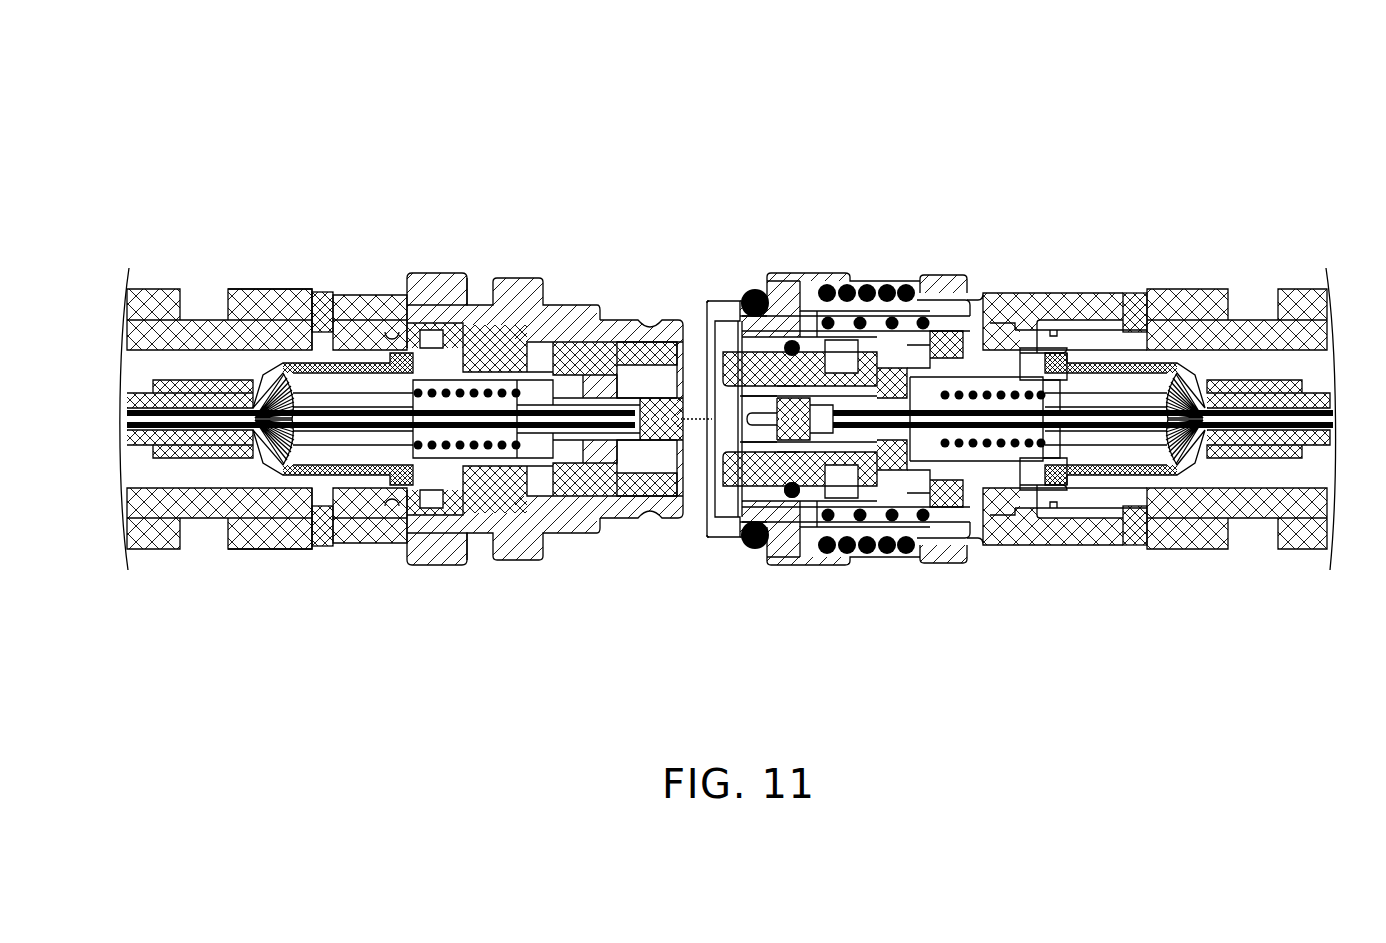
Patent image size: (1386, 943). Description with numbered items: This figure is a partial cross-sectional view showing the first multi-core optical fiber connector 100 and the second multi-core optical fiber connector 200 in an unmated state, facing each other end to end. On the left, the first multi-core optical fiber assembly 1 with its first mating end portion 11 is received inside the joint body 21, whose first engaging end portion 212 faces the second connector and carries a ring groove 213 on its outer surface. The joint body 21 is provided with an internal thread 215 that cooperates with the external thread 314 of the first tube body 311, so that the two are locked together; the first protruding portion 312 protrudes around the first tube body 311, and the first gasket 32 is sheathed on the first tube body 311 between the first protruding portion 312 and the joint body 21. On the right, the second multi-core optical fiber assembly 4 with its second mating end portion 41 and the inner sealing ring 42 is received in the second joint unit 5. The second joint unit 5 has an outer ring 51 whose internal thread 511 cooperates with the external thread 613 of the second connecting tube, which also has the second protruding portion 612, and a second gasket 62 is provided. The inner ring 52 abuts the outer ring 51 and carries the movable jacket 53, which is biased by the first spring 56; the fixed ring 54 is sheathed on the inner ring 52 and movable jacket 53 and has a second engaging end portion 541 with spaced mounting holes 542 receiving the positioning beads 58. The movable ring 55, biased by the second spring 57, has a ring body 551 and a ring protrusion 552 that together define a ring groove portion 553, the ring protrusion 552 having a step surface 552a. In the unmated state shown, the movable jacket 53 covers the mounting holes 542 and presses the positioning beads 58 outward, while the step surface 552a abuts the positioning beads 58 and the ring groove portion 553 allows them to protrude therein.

The first multi-core optical fiber connector 100 is at (228, 163).
The second multi-core optical fiber connector 200 is at (1003, 160).
The first tube body 311 is at (205, 290).
The first protruding portion 312 is at (282, 290).
The first gasket 32 is at (324, 292).
The external thread 314 is at (360, 290).
The internal thread 215 is at (430, 277).
The joint body 21 is at (572, 280).
The first engaging end portion 212 is at (623, 318).
The ring groove 213 is at (658, 330).
The first multi-core optical fiber assembly 1 is at (364, 482).
The first mating end portion 11 is at (677, 462).
The second joint unit 5 is at (957, 262).
The ring body 551 is at (712, 297).
The ring groove portion 553 is at (740, 295).
The ring protrusion 552 is at (797, 277).
The step surface 552a is at (760, 277).
The movable jacket 53 is at (805, 320).
The movable ring 55 is at (840, 277).
The inner ring 52 is at (919, 278).
The outer ring 51 is at (1015, 282).
The internal thread 511 is at (1050, 300).
The external thread 613 is at (1090, 300).
The second gasket 62 is at (1137, 282).
The second protruding portion 612 is at (1203, 282).
The second mating end portion 41 is at (782, 479).
The inner sealing ring 42 is at (790, 490).
The second engaging end portion 541 is at (708, 557).
The positioning beads 58 is at (750, 545).
The mounting holes 542 is at (783, 535).
The fixed ring 54 is at (806, 535).
The second spring 57 is at (906, 535).
The first spring 56 is at (938, 535).
The second multi-core optical fiber assembly 4 is at (1196, 474).